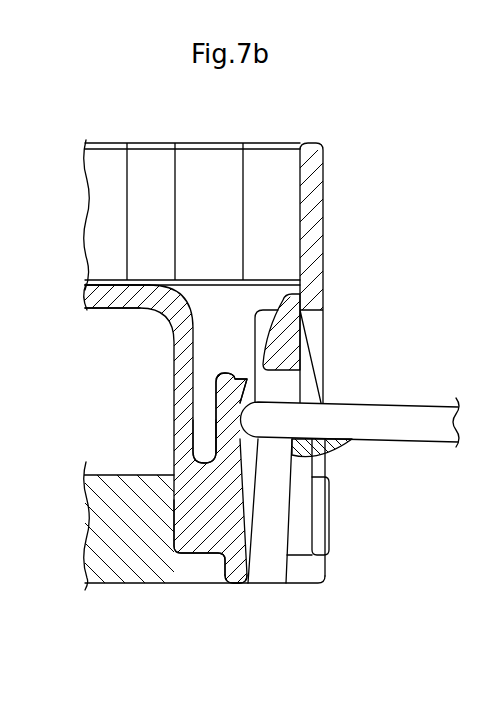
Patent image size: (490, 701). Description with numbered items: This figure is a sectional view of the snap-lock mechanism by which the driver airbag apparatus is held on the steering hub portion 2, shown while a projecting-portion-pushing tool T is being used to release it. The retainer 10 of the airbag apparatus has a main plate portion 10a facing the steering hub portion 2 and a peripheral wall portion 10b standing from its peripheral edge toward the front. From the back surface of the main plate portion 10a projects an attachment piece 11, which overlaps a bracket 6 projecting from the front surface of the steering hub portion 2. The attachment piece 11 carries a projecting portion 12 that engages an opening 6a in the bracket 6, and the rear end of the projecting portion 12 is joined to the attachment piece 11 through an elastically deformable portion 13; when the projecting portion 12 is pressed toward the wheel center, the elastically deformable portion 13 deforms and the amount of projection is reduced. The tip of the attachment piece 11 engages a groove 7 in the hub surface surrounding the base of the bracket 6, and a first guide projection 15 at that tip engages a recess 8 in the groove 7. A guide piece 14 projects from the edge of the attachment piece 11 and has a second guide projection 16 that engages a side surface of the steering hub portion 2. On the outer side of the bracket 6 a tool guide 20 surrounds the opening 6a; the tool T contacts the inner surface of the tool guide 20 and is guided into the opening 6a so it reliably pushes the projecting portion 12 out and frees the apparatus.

The steering hub portion 2 is at (98, 475).
The bracket 6 is at (283, 335).
The opening 6a is at (285, 388).
The groove 7 is at (183, 522).
The recess 8 is at (236, 583).
The retainer 10 is at (238, 237).
The main plate portion 10a is at (107, 308).
The peripheral wall portion 10b is at (162, 143).
The attachment piece 11 is at (180, 392).
The projecting portion 12 is at (240, 375).
The elastically deformable portion 13 is at (195, 443).
The guide piece 14 is at (305, 500).
The first guide projection 15 is at (250, 565).
The second guide projection 16 is at (303, 557).
The tool guide 20 is at (320, 447).
The projecting-portion-pushing tool T is at (429, 407).